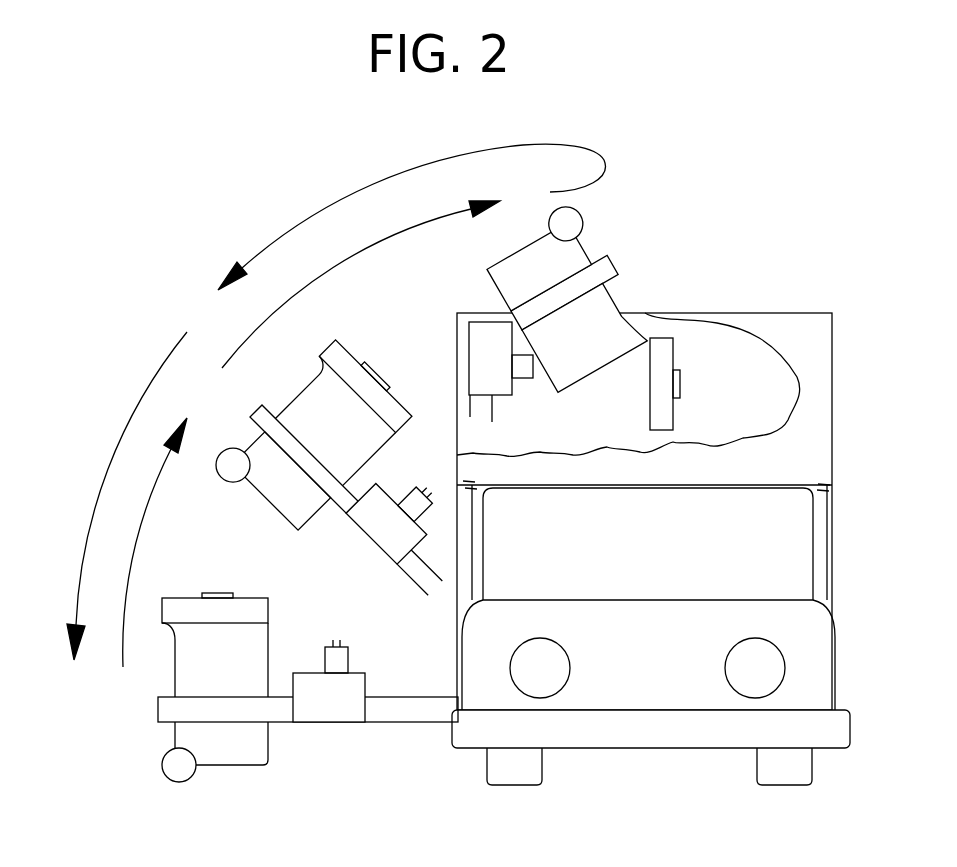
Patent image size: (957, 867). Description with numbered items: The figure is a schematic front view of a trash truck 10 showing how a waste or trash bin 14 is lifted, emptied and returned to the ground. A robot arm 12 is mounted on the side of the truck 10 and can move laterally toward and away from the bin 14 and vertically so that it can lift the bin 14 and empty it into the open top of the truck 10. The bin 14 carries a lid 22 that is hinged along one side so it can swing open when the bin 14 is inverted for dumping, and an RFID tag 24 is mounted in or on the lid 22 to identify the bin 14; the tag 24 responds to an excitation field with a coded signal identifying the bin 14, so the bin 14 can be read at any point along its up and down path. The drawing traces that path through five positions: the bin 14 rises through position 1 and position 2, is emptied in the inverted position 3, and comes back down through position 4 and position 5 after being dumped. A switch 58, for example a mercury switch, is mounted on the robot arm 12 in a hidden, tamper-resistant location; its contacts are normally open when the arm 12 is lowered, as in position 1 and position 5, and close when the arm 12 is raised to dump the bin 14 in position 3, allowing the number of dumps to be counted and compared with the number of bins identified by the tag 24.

The trash truck 10 is at (838, 537).
The robot arm 12 is at (407, 712).
The trash bin 14 is at (257, 648).
The lid 22 is at (178, 605).
The RFID tag 24 is at (217, 593).
The switch 58 is at (340, 658).
The position 1 is at (133, 717).
The position 2 is at (222, 408).
The position 3 is at (533, 207).
The position 4 is at (218, 325).
The position 5 is at (88, 708).